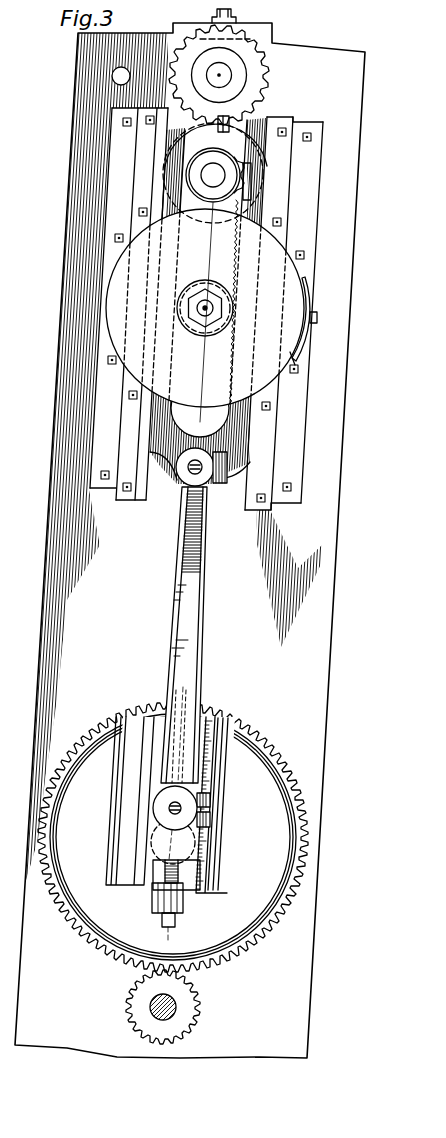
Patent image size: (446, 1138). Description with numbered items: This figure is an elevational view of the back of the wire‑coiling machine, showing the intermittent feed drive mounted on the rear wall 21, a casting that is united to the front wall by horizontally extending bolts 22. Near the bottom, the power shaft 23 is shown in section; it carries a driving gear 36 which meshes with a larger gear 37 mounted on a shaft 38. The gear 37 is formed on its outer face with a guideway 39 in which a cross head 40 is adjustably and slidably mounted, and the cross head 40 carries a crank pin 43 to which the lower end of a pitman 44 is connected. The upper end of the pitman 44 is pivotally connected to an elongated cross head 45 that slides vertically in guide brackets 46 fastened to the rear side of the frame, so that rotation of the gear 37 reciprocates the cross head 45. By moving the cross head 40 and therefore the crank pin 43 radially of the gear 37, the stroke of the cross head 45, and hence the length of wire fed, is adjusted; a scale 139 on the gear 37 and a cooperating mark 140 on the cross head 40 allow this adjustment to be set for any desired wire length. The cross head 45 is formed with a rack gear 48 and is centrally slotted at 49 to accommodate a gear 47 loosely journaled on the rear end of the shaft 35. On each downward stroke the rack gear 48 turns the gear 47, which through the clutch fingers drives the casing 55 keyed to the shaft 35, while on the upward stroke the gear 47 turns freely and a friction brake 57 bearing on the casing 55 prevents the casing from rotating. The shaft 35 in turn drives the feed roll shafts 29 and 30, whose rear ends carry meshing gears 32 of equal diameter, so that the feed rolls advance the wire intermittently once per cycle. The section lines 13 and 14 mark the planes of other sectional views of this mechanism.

The section line 13- 13 is at (187, 683).
The section line 14- 14 is at (208, 208).
The rear wall 21 is at (317, 712).
The bolts 22 is at (112, 75).
The power shaft 23 is at (163, 1013).
The upper feed roll shaft 29 is at (230, 73).
The lower feed roll shaft 30 is at (213, 175).
The meshing gears 32 is at (245, 138).
The shaft 35 is at (203, 316).
The driving gear 36 is at (200, 1007).
The gear 37 is at (300, 830).
The shaft 38 is at (192, 846).
The guideway 39 is at (213, 780).
The cross head 40 is at (213, 832).
The crank pin 43 is at (163, 808).
The pitman 44 is at (203, 612).
The elongated cross head 45 is at (166, 468).
The guide brackets 46 is at (272, 437).
The gear 47 is at (205, 303).
The rack gear 48 is at (243, 188).
The slot 49 is at (228, 470).
The casing 55 is at (290, 358).
The friction brake 57 is at (313, 295).
The scale 139 is at (213, 752).
The mark 140 is at (193, 866).